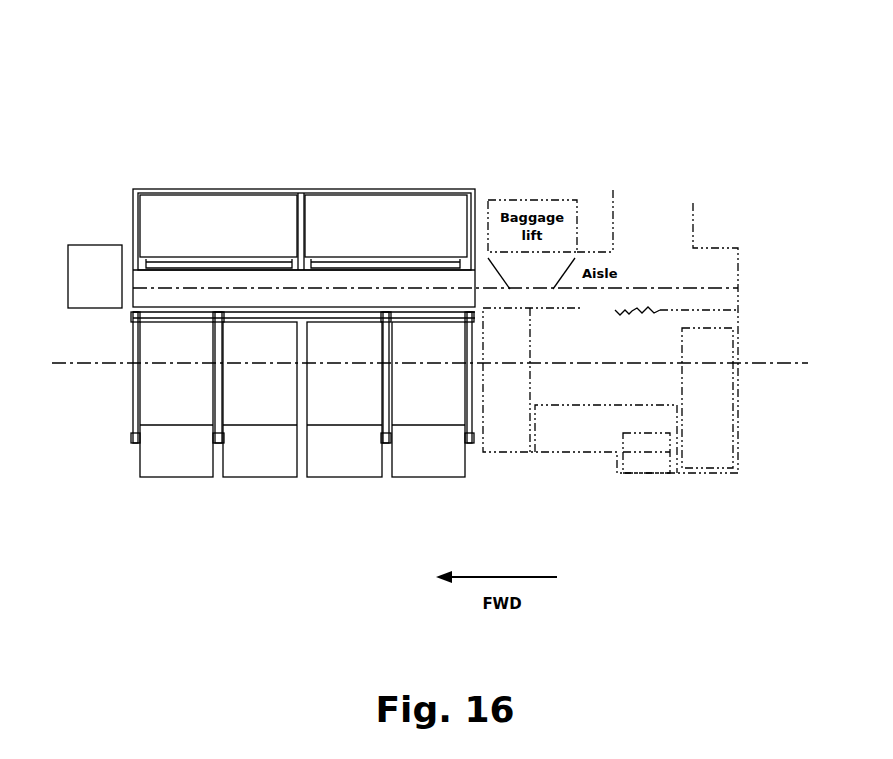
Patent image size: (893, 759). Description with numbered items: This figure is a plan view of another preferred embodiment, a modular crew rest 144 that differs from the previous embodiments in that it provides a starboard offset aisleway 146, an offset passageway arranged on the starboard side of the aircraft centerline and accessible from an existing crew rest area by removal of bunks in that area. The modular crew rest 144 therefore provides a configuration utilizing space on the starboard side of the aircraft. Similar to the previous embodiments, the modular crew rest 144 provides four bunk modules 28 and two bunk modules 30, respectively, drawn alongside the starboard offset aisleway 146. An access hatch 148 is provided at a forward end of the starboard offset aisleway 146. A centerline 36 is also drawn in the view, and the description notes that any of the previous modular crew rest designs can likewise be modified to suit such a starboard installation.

The modular crew rest 144 is at (409, 100).
The bunk modules 30 is at (257, 222).
The starboard offset aisleway 146 is at (213, 282).
The bunk modules 28 is at (245, 460).
The access hatch 148 is at (82, 265).
The centerline 36 is at (793, 365).